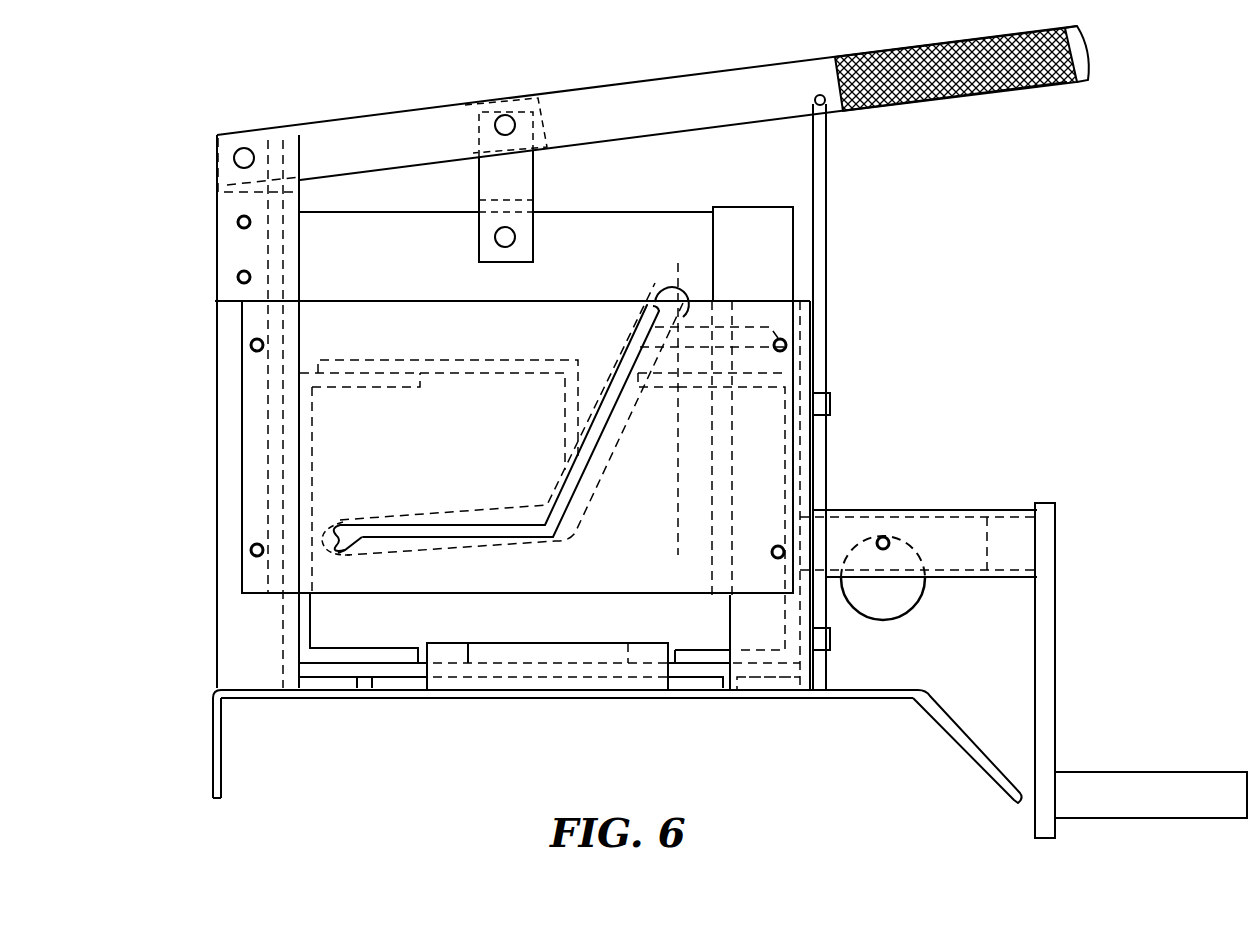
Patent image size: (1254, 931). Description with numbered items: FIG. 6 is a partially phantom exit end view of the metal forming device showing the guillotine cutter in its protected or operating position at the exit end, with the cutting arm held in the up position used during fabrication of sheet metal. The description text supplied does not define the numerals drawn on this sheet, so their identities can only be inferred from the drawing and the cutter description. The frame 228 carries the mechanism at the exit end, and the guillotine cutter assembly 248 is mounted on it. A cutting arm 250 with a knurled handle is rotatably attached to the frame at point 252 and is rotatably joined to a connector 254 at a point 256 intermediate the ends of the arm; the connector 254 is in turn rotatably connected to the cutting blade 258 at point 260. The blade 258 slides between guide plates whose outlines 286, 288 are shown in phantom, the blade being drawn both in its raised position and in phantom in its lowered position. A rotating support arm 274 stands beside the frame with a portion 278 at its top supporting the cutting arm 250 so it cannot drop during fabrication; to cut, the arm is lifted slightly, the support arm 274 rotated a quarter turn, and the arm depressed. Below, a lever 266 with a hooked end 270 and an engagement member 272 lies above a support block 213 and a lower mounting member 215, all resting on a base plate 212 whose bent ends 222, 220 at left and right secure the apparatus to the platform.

The base plate 212 is at (578, 693).
The support block 213 is at (650, 655).
The lower mounting member 215 is at (400, 670).
The bent end of base plate 220 is at (933, 713).
The bent end of base plate 222 is at (220, 754).
The mounting bracket 228 is at (230, 246).
The actuator arm assembly 248 is at (860, 370).
The handle 250 is at (1015, 90).
The pivot hole 252 is at (244, 148).
The link plate 254 is at (487, 188).
The upper pivot hole 256 is at (505, 114).
The lever 258 is at (657, 221).
The lower pivot hole 260 is at (510, 237).
The lever arm 266 is at (523, 528).
The hook end 270 is at (350, 557).
The engagement member 272 is at (333, 523).
The rod 274 is at (822, 252).
The rod pivot 278 is at (819, 94).
The inner plate outline 286 is at (568, 428).
The outer plate outline 288 is at (520, 367).